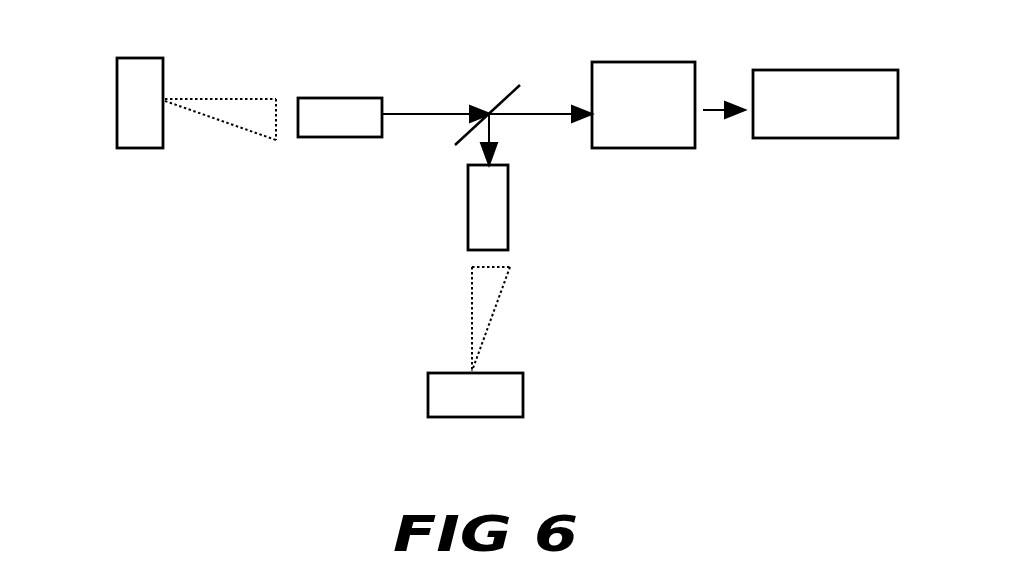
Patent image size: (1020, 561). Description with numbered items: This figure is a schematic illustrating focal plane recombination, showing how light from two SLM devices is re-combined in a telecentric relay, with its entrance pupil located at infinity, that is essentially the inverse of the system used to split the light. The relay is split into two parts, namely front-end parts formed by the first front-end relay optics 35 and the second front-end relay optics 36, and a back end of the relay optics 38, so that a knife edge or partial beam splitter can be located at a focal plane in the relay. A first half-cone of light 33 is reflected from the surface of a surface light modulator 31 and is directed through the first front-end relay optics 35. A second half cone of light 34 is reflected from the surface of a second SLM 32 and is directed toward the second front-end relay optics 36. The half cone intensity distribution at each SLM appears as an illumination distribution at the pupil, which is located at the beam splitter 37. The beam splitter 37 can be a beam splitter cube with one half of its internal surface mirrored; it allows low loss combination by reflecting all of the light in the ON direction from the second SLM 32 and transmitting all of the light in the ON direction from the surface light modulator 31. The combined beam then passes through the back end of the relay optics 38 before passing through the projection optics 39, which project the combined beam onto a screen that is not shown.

The surface light modulator 31 is at (117, 130).
The second SLM 32 is at (523, 385).
The first half-cone of light 33 is at (245, 131).
The second half cone of light 34 is at (503, 302).
The first front-end relay optics 35 is at (330, 98).
The second front-end relay optics 36 is at (508, 207).
The beam splitter 37 is at (500, 105).
The back end of the relay optics 38 is at (623, 62).
The projection optics 39 is at (795, 138).